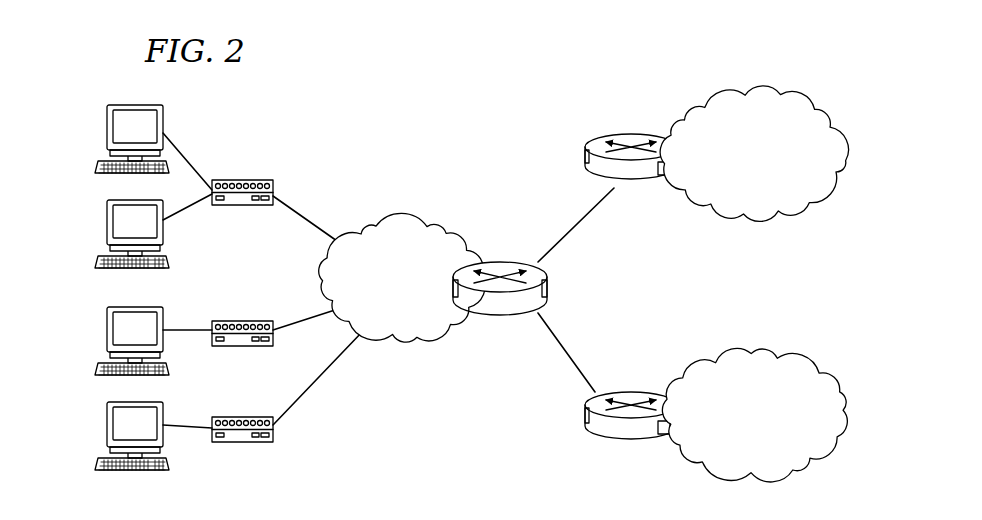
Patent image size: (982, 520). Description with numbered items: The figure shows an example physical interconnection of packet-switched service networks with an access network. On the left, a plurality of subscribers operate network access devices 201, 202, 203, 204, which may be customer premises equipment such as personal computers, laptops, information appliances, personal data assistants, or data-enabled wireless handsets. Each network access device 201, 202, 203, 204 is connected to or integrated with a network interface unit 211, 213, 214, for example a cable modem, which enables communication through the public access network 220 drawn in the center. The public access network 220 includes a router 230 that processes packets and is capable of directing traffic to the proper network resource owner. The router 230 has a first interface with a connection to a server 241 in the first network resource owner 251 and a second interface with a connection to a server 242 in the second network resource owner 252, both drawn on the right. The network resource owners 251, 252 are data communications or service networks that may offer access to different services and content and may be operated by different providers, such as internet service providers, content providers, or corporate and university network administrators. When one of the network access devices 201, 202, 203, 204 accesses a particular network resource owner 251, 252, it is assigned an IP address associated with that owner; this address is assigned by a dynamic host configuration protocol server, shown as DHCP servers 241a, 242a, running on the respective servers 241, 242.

The network access device 201 is at (105, 128).
The network access device 202 is at (105, 221).
The network access device 203 is at (105, 328).
The network access device 204 is at (105, 421).
The network interface unit 211 is at (245, 180).
The network interface unit 213 is at (245, 321).
The network interface unit 214 is at (245, 417).
The public access network 220 is at (419, 225).
The router 230 is at (508, 262).
The server 241 is at (634, 135).
The DHCP server 241a is at (660, 175).
The server 242 is at (634, 393).
The DHCP server 242a is at (657, 434).
The network resource owner 251 is at (754, 93).
The network resource owner 252 is at (754, 355).